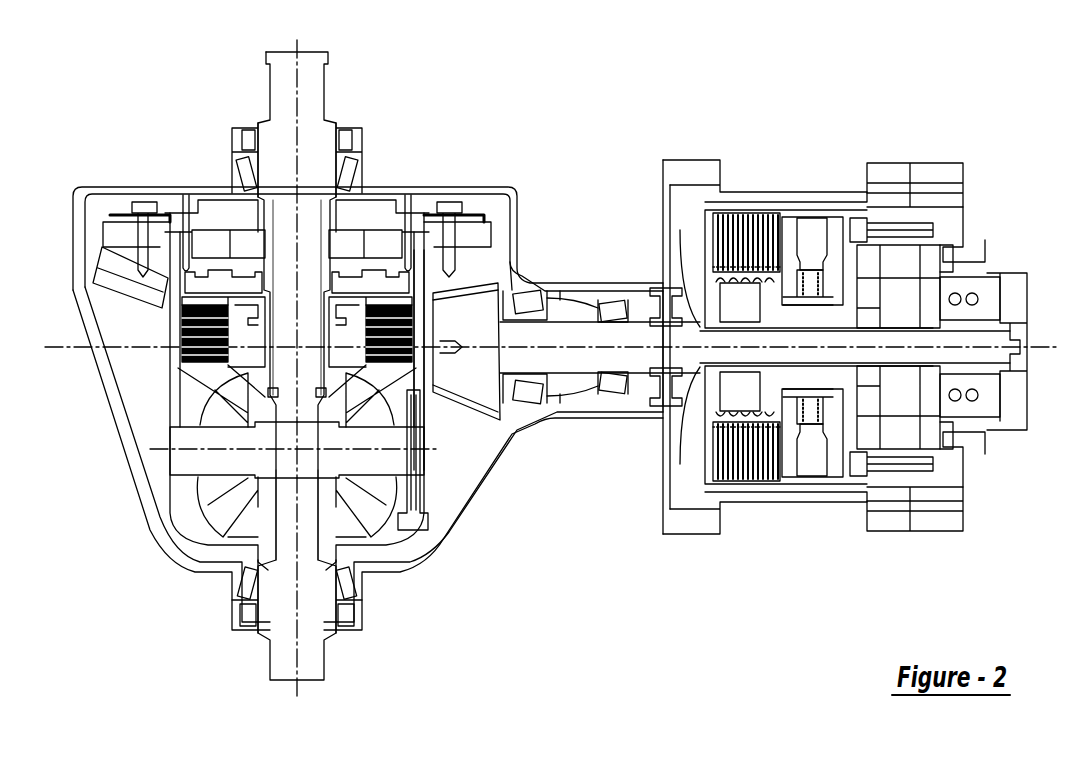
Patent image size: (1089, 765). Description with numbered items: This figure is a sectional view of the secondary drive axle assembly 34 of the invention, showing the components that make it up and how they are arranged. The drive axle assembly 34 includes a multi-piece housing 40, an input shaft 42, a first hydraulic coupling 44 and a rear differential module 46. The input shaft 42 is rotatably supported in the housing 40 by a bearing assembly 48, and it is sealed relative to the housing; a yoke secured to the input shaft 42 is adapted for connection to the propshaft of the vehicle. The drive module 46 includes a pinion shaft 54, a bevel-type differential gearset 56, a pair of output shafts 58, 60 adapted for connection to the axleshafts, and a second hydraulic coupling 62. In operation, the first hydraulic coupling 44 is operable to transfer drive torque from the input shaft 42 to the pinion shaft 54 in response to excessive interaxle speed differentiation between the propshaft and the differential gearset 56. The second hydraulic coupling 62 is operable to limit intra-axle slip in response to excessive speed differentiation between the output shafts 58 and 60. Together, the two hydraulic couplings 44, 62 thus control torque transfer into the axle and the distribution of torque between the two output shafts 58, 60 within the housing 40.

The drive axle assembly 34 is at (564, 353).
The multi-piece housing 40 is at (500, 187).
The input shaft 42 is at (1017, 342).
The first hydraulic coupling 44 is at (728, 203).
The rear differential module 46 is at (512, 262).
The bearing assembly 48 is at (972, 297).
The pinion shaft 54 is at (558, 332).
The bevel-type differential gearset 56 is at (380, 540).
The output shaft 58 is at (318, 93).
The output shaft 60 is at (322, 668).
The second hydraulic coupling 62 is at (160, 370).